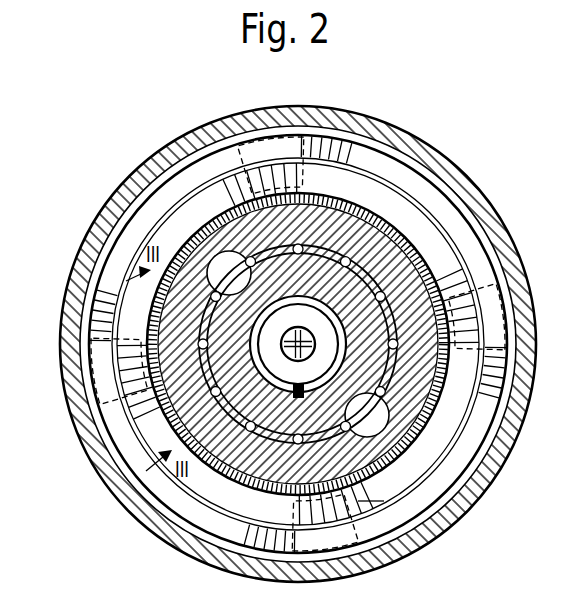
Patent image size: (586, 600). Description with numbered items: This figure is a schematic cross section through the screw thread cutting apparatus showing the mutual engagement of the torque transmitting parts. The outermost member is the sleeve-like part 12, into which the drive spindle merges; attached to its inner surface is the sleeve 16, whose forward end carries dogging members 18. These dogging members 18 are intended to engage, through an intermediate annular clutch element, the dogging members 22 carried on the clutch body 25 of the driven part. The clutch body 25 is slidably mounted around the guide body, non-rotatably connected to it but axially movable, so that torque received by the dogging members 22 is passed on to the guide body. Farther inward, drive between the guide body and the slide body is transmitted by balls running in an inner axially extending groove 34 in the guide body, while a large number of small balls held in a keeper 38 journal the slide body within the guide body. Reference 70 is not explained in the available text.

The sleeve-like part 12 is at (80, 398).
The sleeve 16 is at (383, 162).
The dogging members 18 is at (326, 132).
The dogging members 22 is at (238, 187).
The clutch body 25 is at (430, 233).
The inner axially extending groove 34 is at (470, 498).
The keeper 38 is at (177, 420).
The coil lead 70 is at (358, 586).